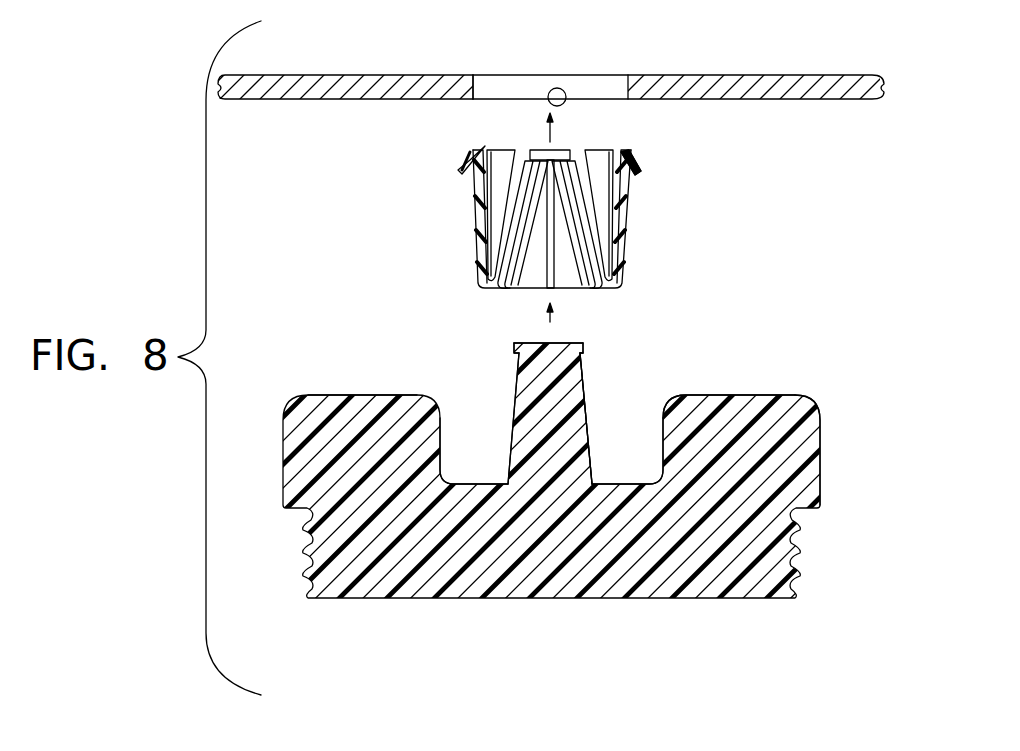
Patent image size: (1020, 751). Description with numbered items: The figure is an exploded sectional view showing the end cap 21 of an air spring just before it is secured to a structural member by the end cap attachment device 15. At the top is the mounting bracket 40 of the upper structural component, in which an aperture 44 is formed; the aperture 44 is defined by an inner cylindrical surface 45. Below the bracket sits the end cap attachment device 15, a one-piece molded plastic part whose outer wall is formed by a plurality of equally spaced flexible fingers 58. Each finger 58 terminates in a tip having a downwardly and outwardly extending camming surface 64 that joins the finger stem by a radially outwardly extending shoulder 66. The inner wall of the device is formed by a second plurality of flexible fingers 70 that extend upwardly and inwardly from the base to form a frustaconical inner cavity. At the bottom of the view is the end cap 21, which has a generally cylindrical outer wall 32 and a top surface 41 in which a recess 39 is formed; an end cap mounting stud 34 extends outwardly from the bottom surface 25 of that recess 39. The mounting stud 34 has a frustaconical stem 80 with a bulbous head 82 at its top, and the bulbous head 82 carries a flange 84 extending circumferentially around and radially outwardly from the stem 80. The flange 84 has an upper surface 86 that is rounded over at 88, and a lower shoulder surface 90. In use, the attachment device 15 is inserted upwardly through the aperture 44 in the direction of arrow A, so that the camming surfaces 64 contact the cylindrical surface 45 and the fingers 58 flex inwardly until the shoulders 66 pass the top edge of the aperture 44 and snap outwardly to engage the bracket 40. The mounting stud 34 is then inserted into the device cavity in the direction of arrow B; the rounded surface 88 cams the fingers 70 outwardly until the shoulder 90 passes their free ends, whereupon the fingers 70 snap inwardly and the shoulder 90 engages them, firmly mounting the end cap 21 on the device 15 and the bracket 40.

The end cap attachment device 15 is at (513, 202).
The end cap 21 is at (783, 607).
The bottom surface 25 is at (465, 483).
The outer wall 32 is at (821, 470).
The end cap mounting stud 34 is at (618, 453).
The recess 39 is at (665, 400).
The mounting bracket 40 is at (713, 78).
The top surface 41 is at (363, 395).
The aperture 44 is at (549, 92).
The inner cylindrical surface 45 is at (473, 80).
The flexible fingers 58 is at (462, 208).
The camming surface 64 is at (633, 163).
The shoulder 66 is at (629, 174).
The flexible fingers 70 is at (520, 185).
The frustaconical stem 80 is at (523, 380).
The bulbous head 82 is at (561, 343).
The flange 84 is at (584, 355).
The upper surface 86 is at (534, 343).
The rounded surface 88 is at (513, 352).
The lower shoulder surface 90 is at (595, 382).
The arrow A is at (553, 132).
The arrow B is at (563, 320).